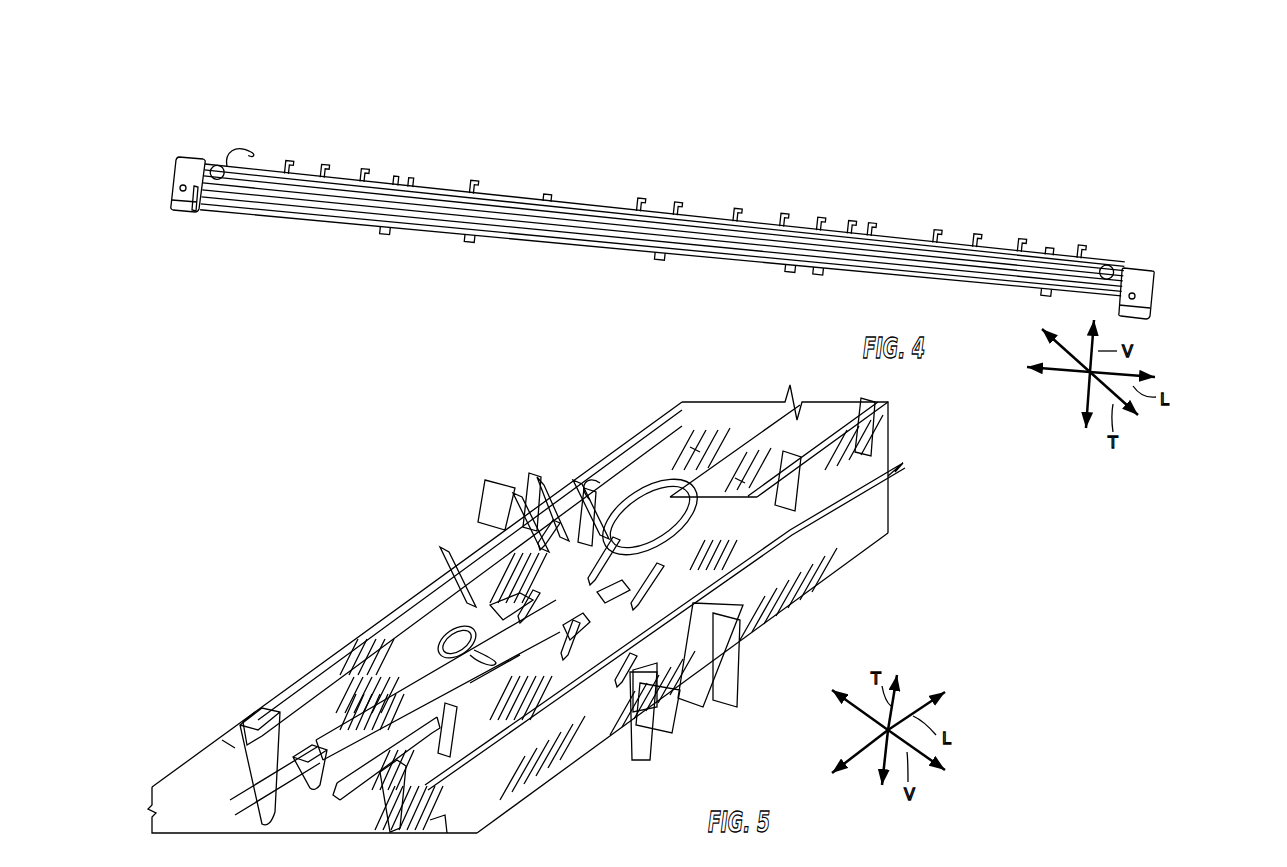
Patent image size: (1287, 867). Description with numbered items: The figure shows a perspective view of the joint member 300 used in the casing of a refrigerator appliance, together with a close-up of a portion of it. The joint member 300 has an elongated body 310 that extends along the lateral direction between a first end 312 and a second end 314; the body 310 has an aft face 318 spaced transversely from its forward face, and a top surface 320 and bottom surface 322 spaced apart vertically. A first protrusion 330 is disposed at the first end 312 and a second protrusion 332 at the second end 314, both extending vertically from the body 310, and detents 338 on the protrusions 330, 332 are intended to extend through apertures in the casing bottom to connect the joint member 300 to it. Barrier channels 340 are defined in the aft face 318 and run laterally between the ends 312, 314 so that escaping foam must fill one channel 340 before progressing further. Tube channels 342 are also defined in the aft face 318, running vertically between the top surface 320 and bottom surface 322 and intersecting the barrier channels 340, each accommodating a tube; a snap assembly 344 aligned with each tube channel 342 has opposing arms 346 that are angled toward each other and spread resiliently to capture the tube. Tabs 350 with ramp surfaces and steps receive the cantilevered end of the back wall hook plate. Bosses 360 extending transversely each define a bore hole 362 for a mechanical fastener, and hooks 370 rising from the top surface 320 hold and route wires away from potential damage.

In FIG. 4, the joint member 300 is at (659, 221).
In FIG. 5, the joint member 300 is at (531, 587).
In FIG. 4, the body 310 is at (663, 214).
In FIG. 5, the body 310 is at (572, 583).
In FIG. 4, the first end 312 is at (145, 164).
In FIG. 4, the second end 314 is at (1176, 290).
In FIG. 4, the aft face 318 is at (663, 229).
In FIG. 5, the aft face 318 is at (297, 693).
In FIG. 4, the top surface 320 is at (665, 213).
In FIG. 5, the top surface 320 is at (195, 765).
In FIG. 4, the bottom surface 322 is at (661, 250).
In FIG. 5, the bottom surface 322 is at (508, 785).
In FIG. 4, the first protrusion 330 is at (165, 205).
In FIG. 4, the second protrusion 332 is at (1158, 320).
In FIG. 4, the detent 338 is at (190, 197).
In FIG. 4, the barrier channel 340 is at (403, 181).
In FIG. 5, the barrier channel 340 is at (735, 476).
In FIG. 4, the tube channel 342 is at (798, 224).
In FIG. 5, the tube channel 342 is at (566, 500).
In FIG. 4, the snap assembly 344 is at (852, 274).
In FIG. 5, the snap assembly 344 is at (505, 488).
In FIG. 5, the arm 346 is at (533, 474).
In FIG. 4, the tab 350 is at (427, 234).
In FIG. 5, the tab 350 is at (443, 777).
In FIG. 4, the boss 360 is at (818, 271).
In FIG. 5, the boss 360 is at (430, 630).
In FIG. 4, the bore hole 362 is at (790, 268).
In FIG. 5, the bore hole 362 is at (634, 564).
In FIG. 4, the hook 370 is at (836, 225).